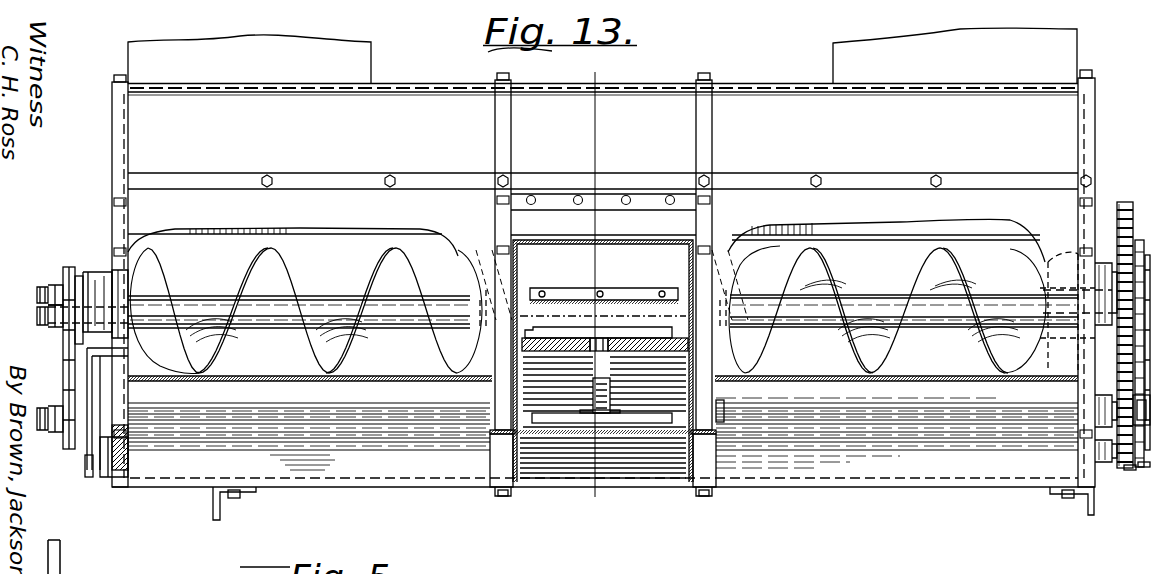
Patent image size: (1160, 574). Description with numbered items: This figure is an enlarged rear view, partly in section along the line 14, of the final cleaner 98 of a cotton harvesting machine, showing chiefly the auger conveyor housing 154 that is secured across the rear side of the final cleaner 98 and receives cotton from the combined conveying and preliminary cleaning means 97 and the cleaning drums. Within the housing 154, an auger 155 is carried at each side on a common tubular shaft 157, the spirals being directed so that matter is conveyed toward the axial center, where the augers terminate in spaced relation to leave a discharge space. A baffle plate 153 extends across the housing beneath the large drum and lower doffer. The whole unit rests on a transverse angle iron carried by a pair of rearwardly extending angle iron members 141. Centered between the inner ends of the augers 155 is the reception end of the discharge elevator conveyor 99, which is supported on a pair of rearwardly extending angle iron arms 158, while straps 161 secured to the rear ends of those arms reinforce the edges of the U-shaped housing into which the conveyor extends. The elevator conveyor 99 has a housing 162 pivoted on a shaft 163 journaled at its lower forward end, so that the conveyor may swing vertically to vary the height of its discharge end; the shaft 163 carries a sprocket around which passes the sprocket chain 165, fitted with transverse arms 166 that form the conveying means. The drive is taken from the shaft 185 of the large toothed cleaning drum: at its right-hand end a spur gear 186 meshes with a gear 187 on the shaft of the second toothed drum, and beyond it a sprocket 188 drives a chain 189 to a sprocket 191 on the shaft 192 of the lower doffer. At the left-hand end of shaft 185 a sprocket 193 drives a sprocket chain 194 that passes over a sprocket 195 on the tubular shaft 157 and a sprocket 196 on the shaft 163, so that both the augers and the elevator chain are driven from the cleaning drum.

The section line 14 is at (600, 65).
The combined conveying and preliminary cleaning means 97 is at (384, 51).
The final cleaner 98 is at (432, 72).
The discharge elevator conveyor 99 is at (646, 435).
The angle iron members 141 is at (217, 506).
The baffle plate 153 is at (207, 440).
The auger conveyor housing 154 is at (286, 380).
The auger 155 is at (302, 333).
The tubular shaft 157 is at (344, 288).
The angle iron arms 158 is at (778, 74).
The straps 161 is at (495, 152).
The housing 162 is at (570, 444).
The shaft 163 is at (463, 411).
The sprocket chain 165 is at (604, 334).
The transverse arms 166 is at (630, 331).
The shaft 185 is at (1099, 262).
The spur gear 186 is at (1126, 202).
The gear 187 is at (1134, 480).
The sprocket 188 is at (1138, 262).
The chain 189 is at (1100, 379).
The sprocket 191 is at (1150, 466).
The shaft 192 is at (1100, 455).
The sprocket 193 is at (58, 286).
The sprocket chain 194 is at (63, 351).
The sprocket 195 is at (57, 320).
The sprocket 196 is at (63, 425).